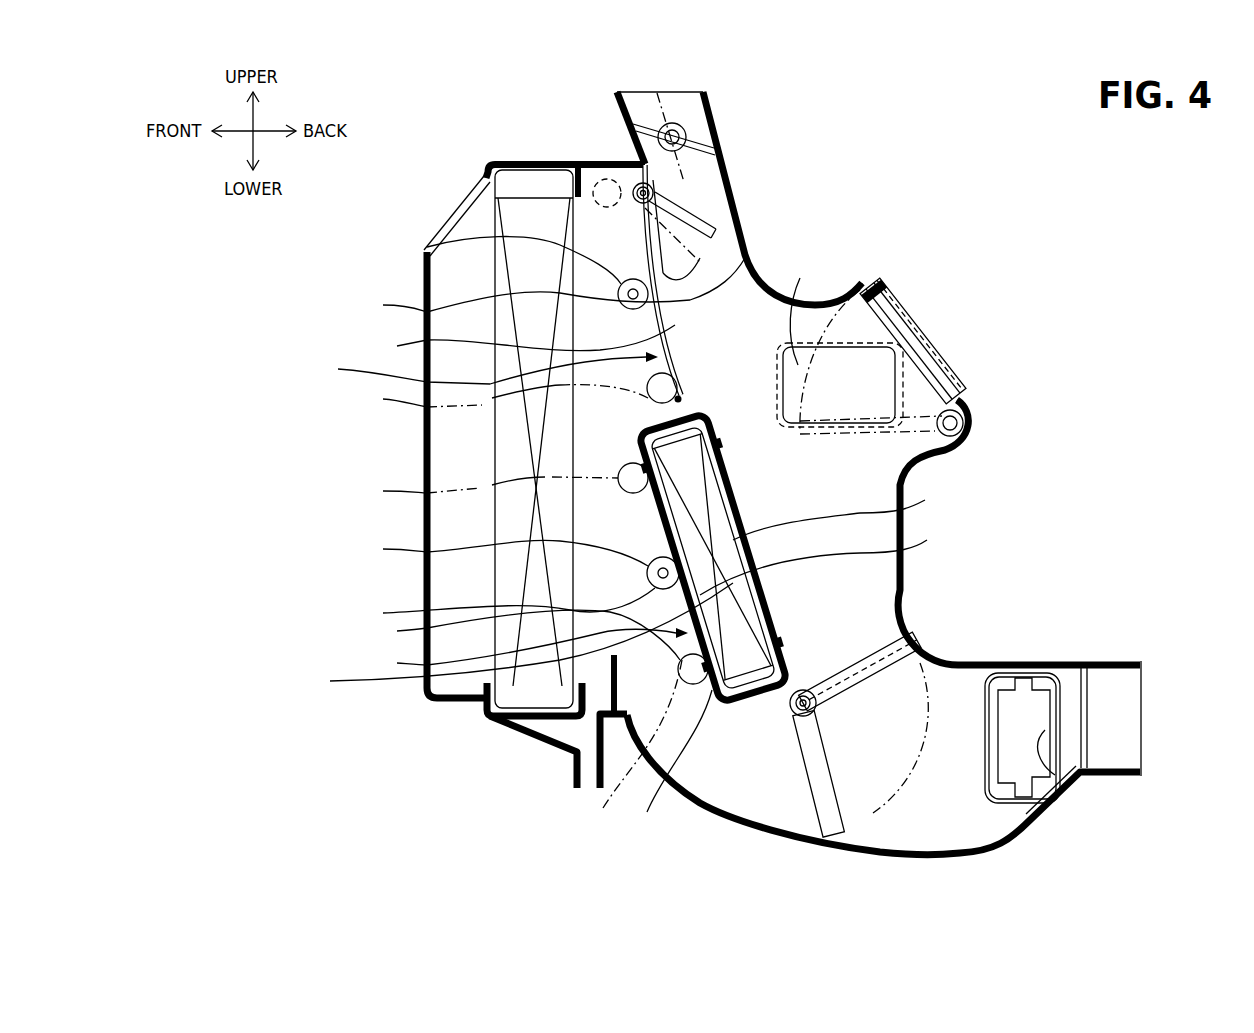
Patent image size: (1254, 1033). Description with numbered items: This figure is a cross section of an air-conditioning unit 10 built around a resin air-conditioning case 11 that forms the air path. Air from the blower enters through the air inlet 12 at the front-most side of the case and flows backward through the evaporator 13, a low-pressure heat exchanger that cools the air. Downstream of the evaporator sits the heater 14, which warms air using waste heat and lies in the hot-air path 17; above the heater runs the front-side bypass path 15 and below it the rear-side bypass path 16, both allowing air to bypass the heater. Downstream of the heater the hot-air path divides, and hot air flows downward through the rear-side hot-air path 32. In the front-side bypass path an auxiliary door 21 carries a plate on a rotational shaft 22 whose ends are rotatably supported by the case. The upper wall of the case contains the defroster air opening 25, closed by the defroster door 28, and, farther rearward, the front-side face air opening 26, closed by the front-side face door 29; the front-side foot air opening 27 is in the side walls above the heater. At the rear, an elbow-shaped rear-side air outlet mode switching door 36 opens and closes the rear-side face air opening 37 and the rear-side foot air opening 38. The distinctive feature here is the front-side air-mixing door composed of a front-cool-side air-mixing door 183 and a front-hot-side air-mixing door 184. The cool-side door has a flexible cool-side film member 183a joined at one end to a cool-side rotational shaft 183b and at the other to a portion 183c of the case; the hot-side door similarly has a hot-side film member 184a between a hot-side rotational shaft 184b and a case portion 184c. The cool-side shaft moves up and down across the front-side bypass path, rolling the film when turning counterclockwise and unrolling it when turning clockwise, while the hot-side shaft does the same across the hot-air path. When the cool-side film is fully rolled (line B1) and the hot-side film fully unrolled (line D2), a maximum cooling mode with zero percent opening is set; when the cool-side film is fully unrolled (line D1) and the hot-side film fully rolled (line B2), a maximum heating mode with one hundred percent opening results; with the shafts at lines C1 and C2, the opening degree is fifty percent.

The air-conditioning unit 10 is at (521, 146).
The air-conditioning case 11 is at (458, 224).
The air inlet 12 is at (455, 431).
The evaporator 13 is at (532, 577).
The heater 14 is at (936, 532).
The front-side bypass path 15 is at (749, 250).
The rear-side bypass path 16 is at (718, 742).
The hot-air path 17 is at (793, 557).
The auxiliary door 21 is at (730, 204).
The rotational shaft 22 is at (636, 184).
The defroster air opening 25 is at (682, 100).
The front-side face air opening 26 is at (935, 351).
The front-side foot air opening 27 is at (797, 345).
The defroster door 28 is at (700, 136).
The front-side face door 29 is at (882, 292).
The rear-side hot-air path 32 is at (862, 640).
The rear-side air outlet mode switching door 36 is at (1050, 780).
The rear-side face air opening 37 is at (1120, 722).
The rear-side foot air opening 38 is at (1042, 672).
The front-cool-side air-mixing door 183 is at (475, 368).
The cool-side film member 183a is at (509, 344).
The cool-side rotational shaft 183b is at (427, 244).
The portion of the air-conditioning case 183c is at (857, 344).
The front-hot-side air-mixing door 184 is at (510, 639).
The hot-side film member 184a is at (515, 653).
The hot-side rotational shaft 184b is at (525, 647).
The portion of the air-conditioning case 184c is at (670, 766).
The chain double-dashed line B1 is at (508, 391).
The chain double-dashed line B2 is at (630, 762).
The chain double-dashed line C1 is at (542, 288).
The chain double-dashed line C2 is at (509, 575).
The chain double-dashed line D1 is at (579, 161).
The chain double-dashed line D2 is at (494, 482).